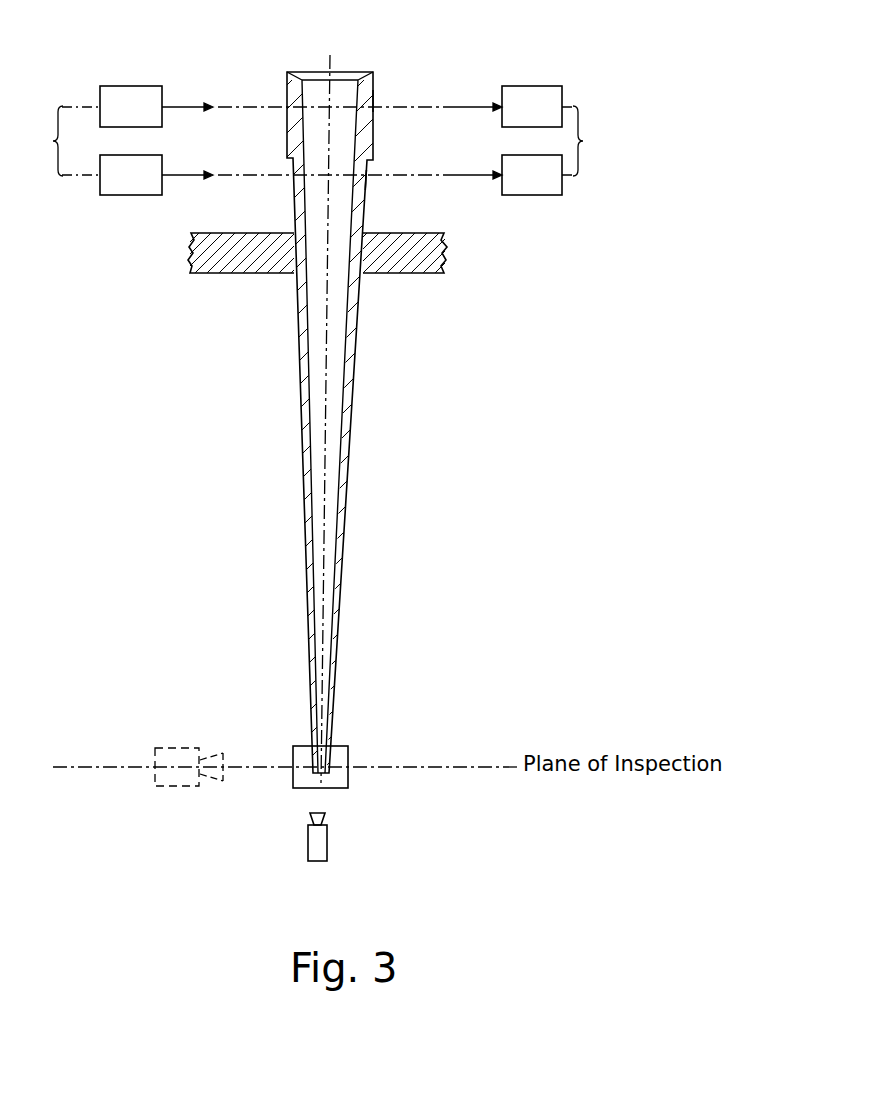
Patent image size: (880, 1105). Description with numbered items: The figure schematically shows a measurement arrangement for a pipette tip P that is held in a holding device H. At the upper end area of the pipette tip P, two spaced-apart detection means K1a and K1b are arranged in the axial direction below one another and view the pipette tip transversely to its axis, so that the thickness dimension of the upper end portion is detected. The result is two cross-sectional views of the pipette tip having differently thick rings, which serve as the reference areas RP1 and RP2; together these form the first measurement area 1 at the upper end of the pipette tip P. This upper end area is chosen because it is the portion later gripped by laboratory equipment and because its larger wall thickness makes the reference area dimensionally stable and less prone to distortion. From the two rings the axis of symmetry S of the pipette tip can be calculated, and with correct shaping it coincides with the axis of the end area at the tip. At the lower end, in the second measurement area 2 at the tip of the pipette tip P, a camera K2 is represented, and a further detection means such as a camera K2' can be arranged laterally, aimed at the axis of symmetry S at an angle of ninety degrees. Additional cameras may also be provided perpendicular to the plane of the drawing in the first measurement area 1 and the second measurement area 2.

The detection means K1a is at (128, 106).
The detection means K1b is at (114, 190).
The first measurement area 1 is at (323, 141).
The reference area RP1 is at (372, 100).
The reference area RP2 is at (366, 182).
The holding device H is at (216, 266).
The axis of symmetry S is at (330, 328).
The pipette tip P is at (363, 410).
The second measurement area 2 is at (350, 789).
The camera K2 is at (259, 850).
The camera K2' is at (153, 800).